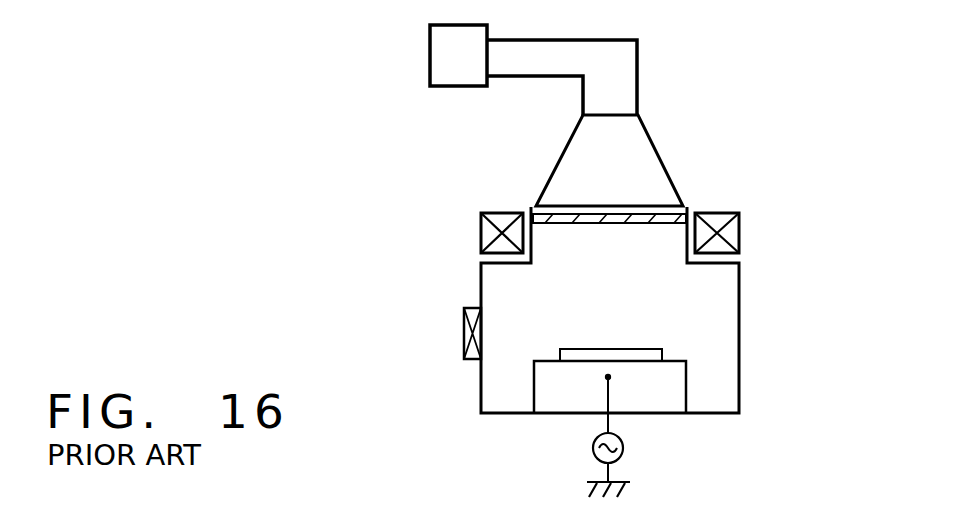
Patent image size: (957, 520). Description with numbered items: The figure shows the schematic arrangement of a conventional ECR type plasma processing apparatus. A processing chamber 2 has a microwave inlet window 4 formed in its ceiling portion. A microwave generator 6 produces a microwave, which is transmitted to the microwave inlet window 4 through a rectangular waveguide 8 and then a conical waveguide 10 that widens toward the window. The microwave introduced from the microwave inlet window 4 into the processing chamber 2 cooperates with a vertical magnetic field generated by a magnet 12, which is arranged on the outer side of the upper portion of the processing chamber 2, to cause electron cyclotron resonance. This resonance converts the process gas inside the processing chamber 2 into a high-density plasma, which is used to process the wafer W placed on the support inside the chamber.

The processing chamber 2 is at (739, 343).
The microwave inlet window 4 is at (640, 215).
The microwave generator 6 is at (458, 70).
The rectangular waveguide 8 is at (537, 63).
The conical waveguide 10 is at (652, 139).
The magnet 12 is at (742, 233).
The wafer W is at (630, 348).